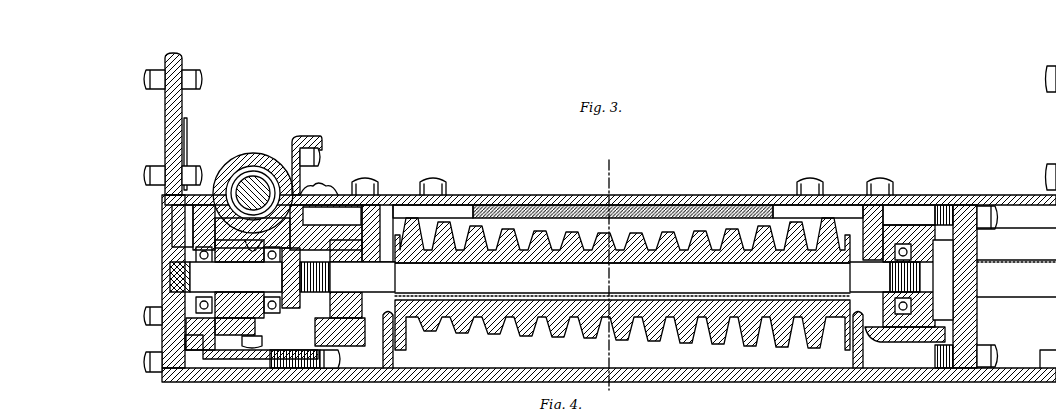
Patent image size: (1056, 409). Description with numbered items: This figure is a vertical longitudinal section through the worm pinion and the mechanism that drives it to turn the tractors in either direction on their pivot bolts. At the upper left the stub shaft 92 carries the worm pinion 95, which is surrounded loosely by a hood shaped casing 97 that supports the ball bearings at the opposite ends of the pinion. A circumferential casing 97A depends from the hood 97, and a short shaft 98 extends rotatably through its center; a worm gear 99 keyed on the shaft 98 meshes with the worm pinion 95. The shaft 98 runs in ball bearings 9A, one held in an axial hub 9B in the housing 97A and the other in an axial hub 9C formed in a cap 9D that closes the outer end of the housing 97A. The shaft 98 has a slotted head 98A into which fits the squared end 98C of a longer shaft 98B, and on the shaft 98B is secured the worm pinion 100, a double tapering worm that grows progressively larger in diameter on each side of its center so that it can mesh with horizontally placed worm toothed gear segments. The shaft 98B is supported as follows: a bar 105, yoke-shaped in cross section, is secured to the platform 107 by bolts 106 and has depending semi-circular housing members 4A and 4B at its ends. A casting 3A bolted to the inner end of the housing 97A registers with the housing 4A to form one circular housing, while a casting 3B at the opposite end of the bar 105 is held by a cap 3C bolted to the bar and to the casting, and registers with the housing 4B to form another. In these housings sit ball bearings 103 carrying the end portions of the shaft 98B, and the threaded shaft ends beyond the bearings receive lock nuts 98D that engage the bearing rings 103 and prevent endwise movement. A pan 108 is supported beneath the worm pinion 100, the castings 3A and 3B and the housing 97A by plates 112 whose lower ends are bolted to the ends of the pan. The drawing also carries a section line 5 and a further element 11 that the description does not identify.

The platform 107 is at (176, 58).
The bolts 106 is at (436, 182).
The bar 105 is at (545, 205).
The pan 108 is at (760, 382).
The plates 112 is at (162, 217).
The section line 5 is at (612, 272).
The semi-circular housing member 4A is at (386, 205).
The semi-circular housing member 4B is at (898, 208).
The shaft 98B is at (622, 255).
The worm pinion 100 is at (530, 352).
The shaft 98 is at (236, 279).
The slotted head 98A is at (310, 250).
The squared end 98C is at (282, 278).
The lock nuts 98D is at (342, 282).
The worm gear 99 is at (245, 227).
The hood shaped casing 97 is at (292, 160).
The circumferential casing 97A is at (236, 360).
The worm pinion 95 is at (253, 170).
The stub shaft 92 is at (246, 185).
The ball bearings 9A is at (196, 255).
The axial hub 9B is at (252, 350).
The axial hub 9C is at (185, 310).
The cap 9D is at (175, 277).
The ball bearings 103 is at (340, 346).
The casting 3A is at (335, 372).
The casting 3B is at (895, 330).
The cap 3C is at (977, 321).
The shaft 11 is at (1020, 240).